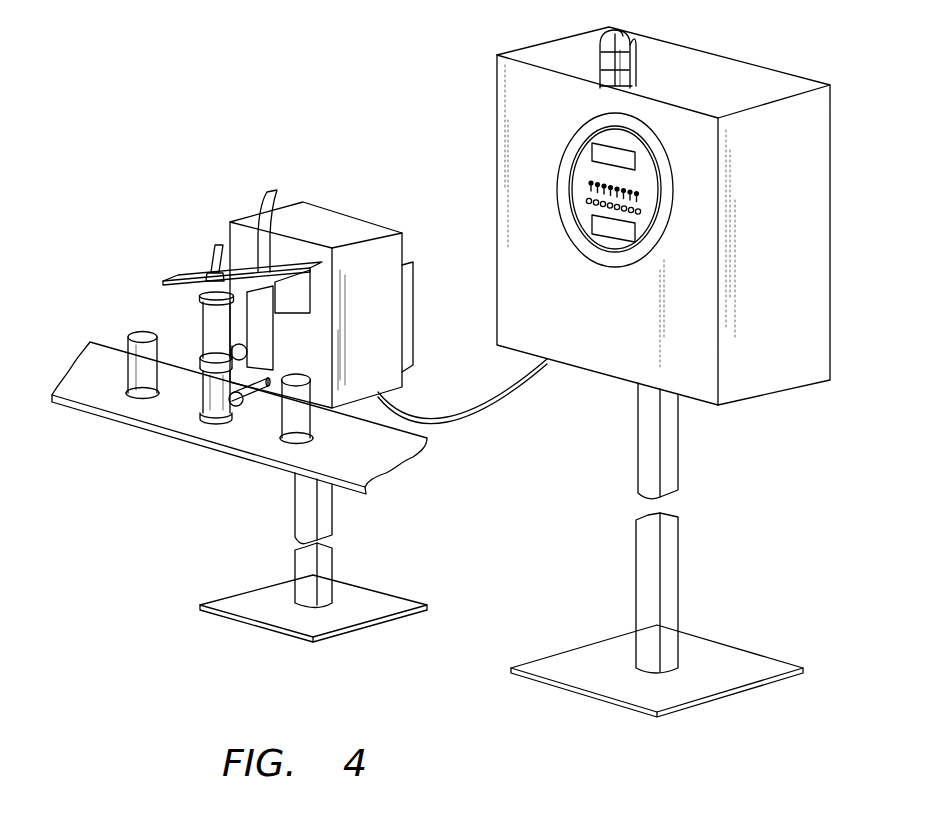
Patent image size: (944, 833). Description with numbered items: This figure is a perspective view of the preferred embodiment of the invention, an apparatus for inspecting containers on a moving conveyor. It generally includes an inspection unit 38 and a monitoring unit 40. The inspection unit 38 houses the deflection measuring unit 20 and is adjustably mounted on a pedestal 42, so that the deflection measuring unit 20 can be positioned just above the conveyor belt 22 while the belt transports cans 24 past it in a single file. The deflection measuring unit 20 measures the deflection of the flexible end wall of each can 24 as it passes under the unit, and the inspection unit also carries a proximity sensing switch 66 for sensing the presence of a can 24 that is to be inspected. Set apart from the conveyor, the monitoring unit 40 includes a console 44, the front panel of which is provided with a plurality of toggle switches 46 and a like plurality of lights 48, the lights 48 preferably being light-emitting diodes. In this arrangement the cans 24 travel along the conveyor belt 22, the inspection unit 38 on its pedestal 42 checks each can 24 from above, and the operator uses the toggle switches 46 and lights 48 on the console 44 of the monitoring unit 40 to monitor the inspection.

The deflection measuring unit 20 is at (213, 330).
The conveyor belt 22 is at (125, 422).
The can 24 is at (137, 368).
The inspection unit 38 is at (380, 230).
The monitoring unit 40 is at (808, 172).
The pedestal 42 is at (307, 495).
The console 44 is at (610, 240).
The toggle switches 46 is at (641, 205).
The lights 48 is at (587, 200).
The proximity sensing switch 66 is at (246, 352).